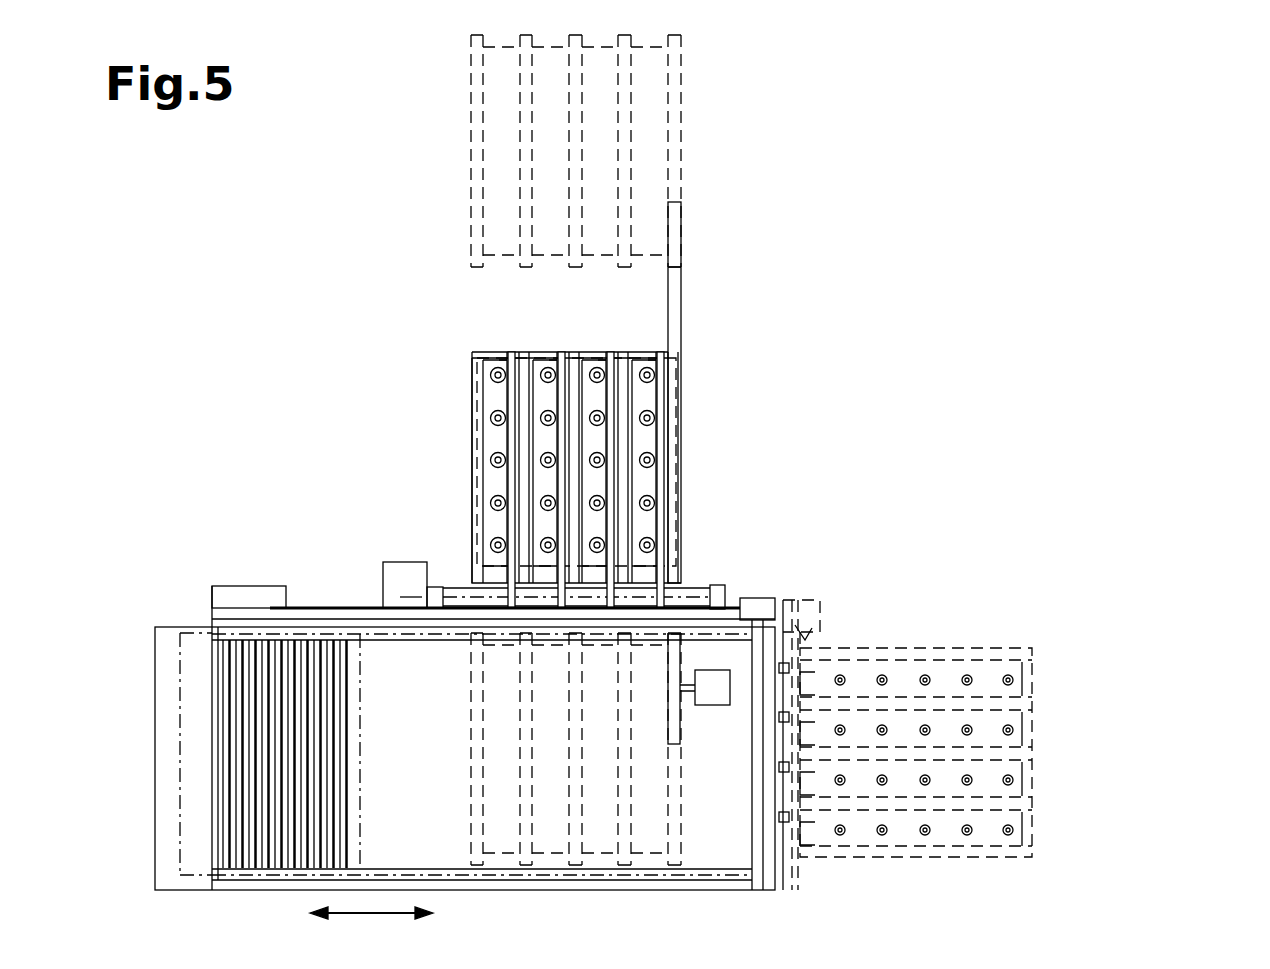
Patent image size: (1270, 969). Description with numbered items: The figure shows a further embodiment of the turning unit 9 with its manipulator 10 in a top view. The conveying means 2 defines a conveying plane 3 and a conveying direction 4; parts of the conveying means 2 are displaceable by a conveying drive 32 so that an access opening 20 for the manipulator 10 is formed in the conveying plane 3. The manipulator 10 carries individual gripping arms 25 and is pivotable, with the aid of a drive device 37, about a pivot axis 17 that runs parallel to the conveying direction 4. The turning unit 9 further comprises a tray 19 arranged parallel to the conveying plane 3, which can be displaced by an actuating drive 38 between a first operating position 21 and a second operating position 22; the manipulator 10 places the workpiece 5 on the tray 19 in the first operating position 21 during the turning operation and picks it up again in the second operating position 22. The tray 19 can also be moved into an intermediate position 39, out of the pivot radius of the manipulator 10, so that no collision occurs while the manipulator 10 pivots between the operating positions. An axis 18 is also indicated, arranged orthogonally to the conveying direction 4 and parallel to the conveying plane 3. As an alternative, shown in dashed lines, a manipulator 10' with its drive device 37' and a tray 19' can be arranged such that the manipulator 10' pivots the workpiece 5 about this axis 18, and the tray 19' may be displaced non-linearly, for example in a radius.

The conveying means 2 is at (218, 513).
The conveying plane 3 is at (196, 660).
The conveying direction 4 is at (368, 913).
The workpiece 5 is at (672, 382).
The turning unit 9 is at (312, 397).
The manipulator 10 is at (664, 470).
The manipulator 10' is at (1023, 698).
The pivot axis 17 is at (414, 596).
The axis 18 is at (812, 630).
The tray 19 is at (497, 450).
The tray 19' is at (1033, 765).
The access opening 20 is at (357, 622).
The first operating position 21 is at (462, 352).
The second operating position 22 is at (697, 824).
The gripping arms 25 is at (505, 362).
The conveying drive 32 is at (240, 595).
The drive device 37 is at (341, 543).
The drive device 37' is at (875, 575).
The actuating drive 38 is at (722, 672).
The intermediate position 39 is at (437, 170).